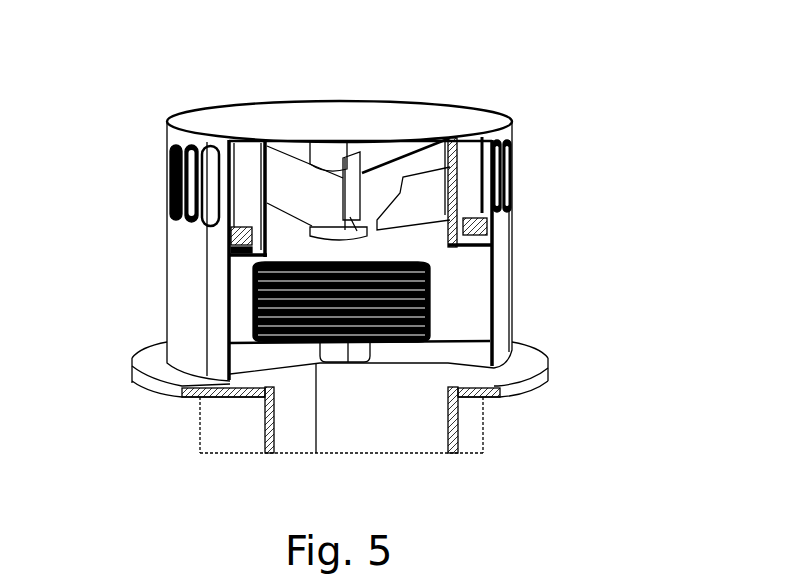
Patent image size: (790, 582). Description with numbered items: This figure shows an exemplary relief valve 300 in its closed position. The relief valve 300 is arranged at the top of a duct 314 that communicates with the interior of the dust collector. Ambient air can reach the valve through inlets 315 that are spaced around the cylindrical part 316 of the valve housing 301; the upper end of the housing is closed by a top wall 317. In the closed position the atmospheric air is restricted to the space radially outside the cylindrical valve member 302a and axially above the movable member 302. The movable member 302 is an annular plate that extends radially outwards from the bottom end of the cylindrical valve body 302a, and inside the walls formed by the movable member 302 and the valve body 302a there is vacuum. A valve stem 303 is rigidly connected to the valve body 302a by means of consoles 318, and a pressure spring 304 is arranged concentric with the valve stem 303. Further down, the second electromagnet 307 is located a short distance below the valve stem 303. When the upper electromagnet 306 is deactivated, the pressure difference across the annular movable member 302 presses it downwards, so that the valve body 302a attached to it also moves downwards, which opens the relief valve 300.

The relief valve 300 is at (136, 65).
The valve housing 301 is at (197, 303).
The movable member 302 is at (235, 252).
The cylindrical valve member 302a is at (243, 173).
The valve stem 303 is at (362, 236).
The pressure spring 304 is at (262, 306).
The upper electromagnet 306 is at (410, 135).
The second electromagnet 307 is at (340, 352).
The duct 314 is at (217, 425).
The inlets 315 is at (167, 163).
The cylindrical part 316 is at (188, 283).
The top wall 317 is at (205, 120).
The consoles 318 is at (290, 173).